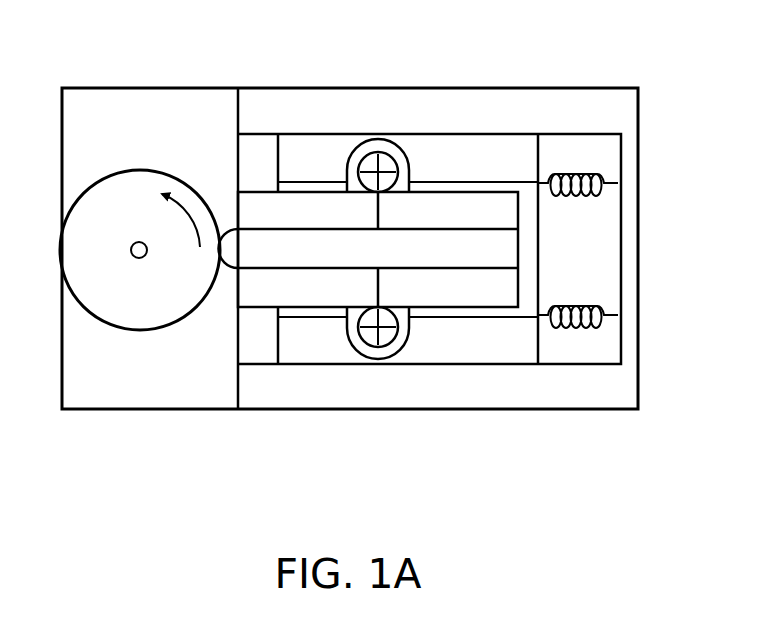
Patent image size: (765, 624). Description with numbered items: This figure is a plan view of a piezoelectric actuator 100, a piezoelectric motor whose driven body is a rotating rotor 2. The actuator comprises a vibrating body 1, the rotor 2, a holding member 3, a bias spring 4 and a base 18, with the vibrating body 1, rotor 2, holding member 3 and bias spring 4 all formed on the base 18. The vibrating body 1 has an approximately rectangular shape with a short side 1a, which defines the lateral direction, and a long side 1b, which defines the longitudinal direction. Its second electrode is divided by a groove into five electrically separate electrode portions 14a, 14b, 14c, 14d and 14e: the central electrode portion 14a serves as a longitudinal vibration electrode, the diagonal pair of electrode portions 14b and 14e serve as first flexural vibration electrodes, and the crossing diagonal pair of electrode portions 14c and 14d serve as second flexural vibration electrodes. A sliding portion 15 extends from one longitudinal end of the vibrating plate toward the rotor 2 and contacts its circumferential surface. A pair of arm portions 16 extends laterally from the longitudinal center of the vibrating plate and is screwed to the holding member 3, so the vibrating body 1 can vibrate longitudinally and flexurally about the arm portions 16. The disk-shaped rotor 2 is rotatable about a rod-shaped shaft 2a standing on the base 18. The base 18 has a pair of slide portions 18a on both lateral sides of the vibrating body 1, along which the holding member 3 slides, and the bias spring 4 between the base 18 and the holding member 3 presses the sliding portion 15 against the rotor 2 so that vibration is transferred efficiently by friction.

The piezoelectric actuator 100 is at (350, 233).
The vibrating body 1 is at (390, 240).
The short side 1a is at (519, 249).
The long side 1b is at (441, 310).
The rotor 2 is at (140, 224).
The shaft 2a is at (138, 259).
The holding member 3 is at (418, 148).
The bias spring 4 is at (620, 173).
The electrode portion 14a is at (456, 236).
The electrode portion 14b is at (257, 300).
The electrode portion 14c is at (497, 298).
The electrode portion 14d is at (258, 200).
The electrode portion 14e is at (511, 200).
The sliding portion 15 is at (222, 270).
The arm portion 16 is at (383, 150).
The base 18 is at (67, 388).
The slide portion 18a is at (520, 98).